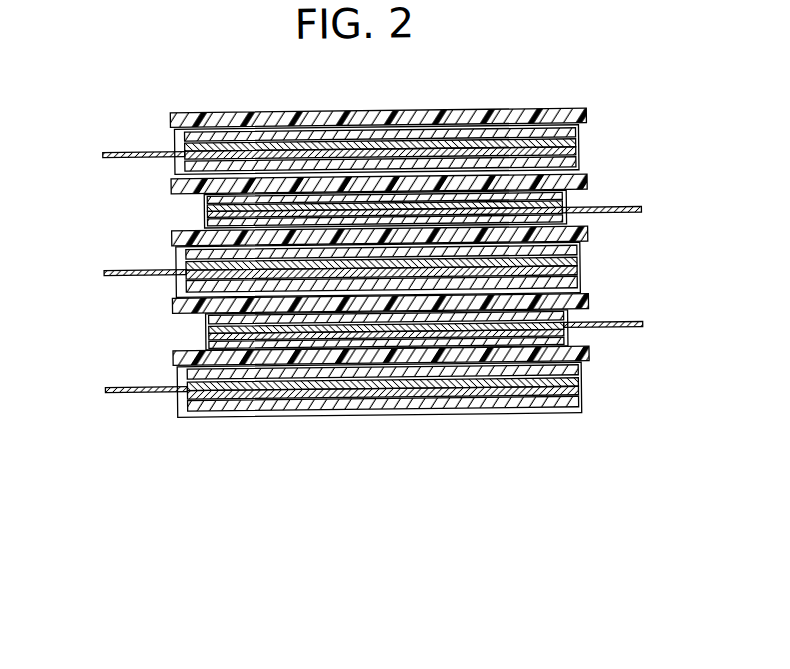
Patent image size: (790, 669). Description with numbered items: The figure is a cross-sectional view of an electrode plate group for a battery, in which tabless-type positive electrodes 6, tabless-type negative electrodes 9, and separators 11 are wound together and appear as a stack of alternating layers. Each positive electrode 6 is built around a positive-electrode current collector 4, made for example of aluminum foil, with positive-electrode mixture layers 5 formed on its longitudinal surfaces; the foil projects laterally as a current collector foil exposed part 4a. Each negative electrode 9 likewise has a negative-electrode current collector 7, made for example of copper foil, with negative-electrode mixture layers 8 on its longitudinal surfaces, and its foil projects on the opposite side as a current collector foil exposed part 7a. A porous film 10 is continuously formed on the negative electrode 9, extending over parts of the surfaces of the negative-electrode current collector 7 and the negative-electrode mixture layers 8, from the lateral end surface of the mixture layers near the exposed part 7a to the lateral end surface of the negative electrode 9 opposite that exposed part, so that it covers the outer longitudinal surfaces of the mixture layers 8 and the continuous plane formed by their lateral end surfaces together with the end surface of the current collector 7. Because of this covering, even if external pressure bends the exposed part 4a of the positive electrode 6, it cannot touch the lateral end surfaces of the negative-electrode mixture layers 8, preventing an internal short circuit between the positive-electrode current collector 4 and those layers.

The porous film 10 is at (560, 112).
The separator 11 is at (173, 114).
The negative electrode 9 is at (645, 120).
The negative-electrode current collector 7 is at (580, 137).
The current collector foil exposed part 7a is at (104, 153).
The negative-electrode mixture layers 8 is at (580, 165).
The positive electrode 6 is at (121, 175).
The positive-electrode current collector 4 is at (205, 211).
The current collector foil exposed part 4a is at (642, 214).
The positive-electrode mixture layers 5 is at (205, 222).